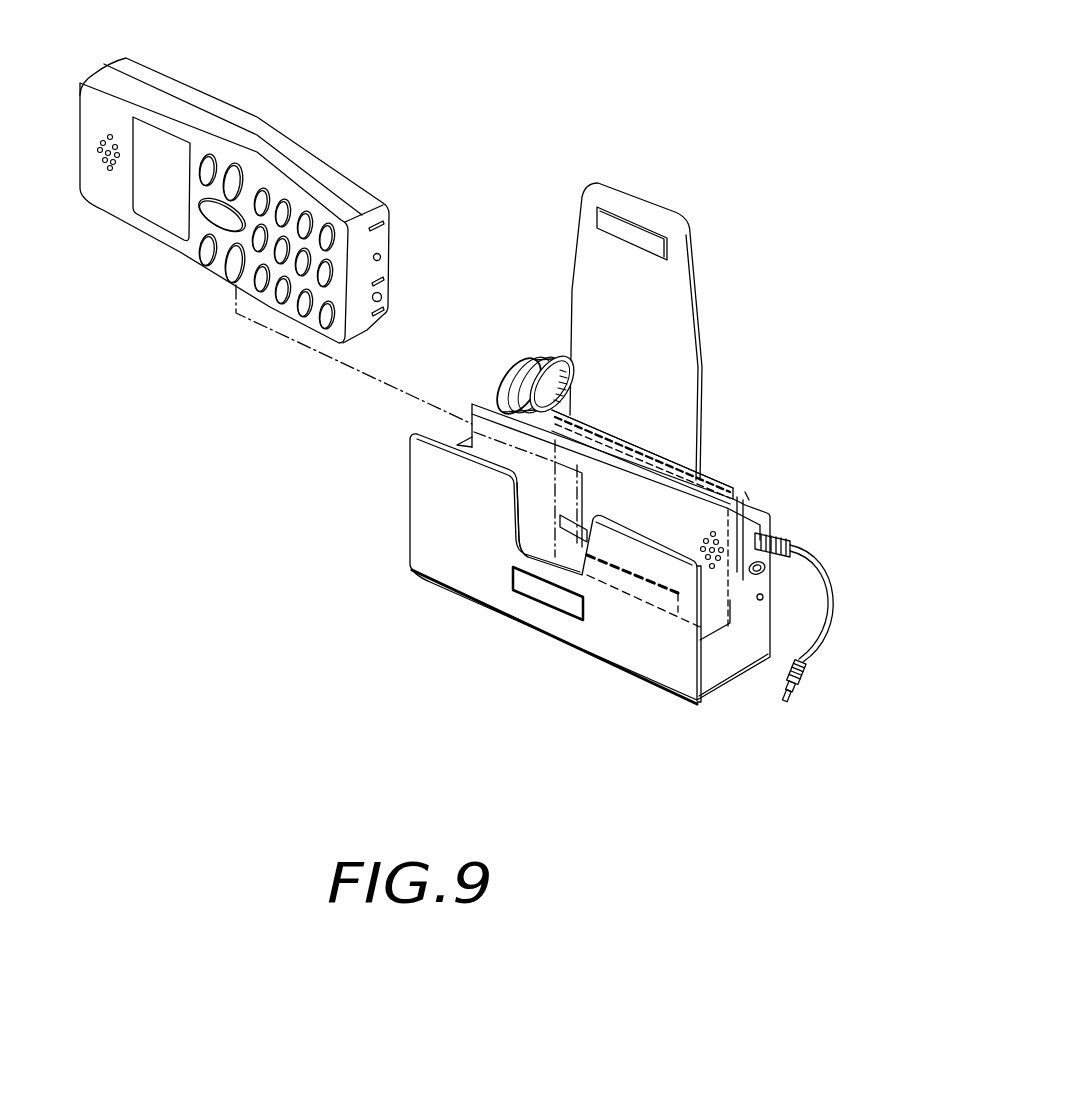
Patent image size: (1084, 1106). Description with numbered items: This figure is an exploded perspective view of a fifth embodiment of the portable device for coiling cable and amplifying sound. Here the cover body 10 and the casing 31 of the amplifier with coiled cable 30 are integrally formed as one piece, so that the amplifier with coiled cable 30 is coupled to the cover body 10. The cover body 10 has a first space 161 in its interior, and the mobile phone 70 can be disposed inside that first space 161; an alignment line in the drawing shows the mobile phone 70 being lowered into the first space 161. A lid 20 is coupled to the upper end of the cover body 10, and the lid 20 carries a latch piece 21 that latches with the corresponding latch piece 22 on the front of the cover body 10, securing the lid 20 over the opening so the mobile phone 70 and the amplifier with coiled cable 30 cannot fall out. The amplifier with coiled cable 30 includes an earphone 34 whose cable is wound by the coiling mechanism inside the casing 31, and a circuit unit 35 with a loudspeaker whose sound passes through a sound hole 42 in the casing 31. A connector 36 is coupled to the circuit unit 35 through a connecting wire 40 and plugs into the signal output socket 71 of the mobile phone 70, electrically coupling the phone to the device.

The cover body 10 is at (402, 485).
The lid 20 is at (663, 293).
The latch piece 21 is at (660, 247).
The latch piece 22 is at (553, 597).
The amplifier with coiled cable 30 is at (595, 420).
The casing 31 is at (607, 435).
The earphone 34 is at (540, 355).
The circuit unit 35 is at (745, 492).
The connector 36 is at (810, 672).
The connecting wire 40 is at (828, 590).
The sound hole 42 is at (790, 541).
The mobile phone 70 is at (230, 122).
The signal output socket 71 is at (380, 259).
The first space 161 is at (530, 496).